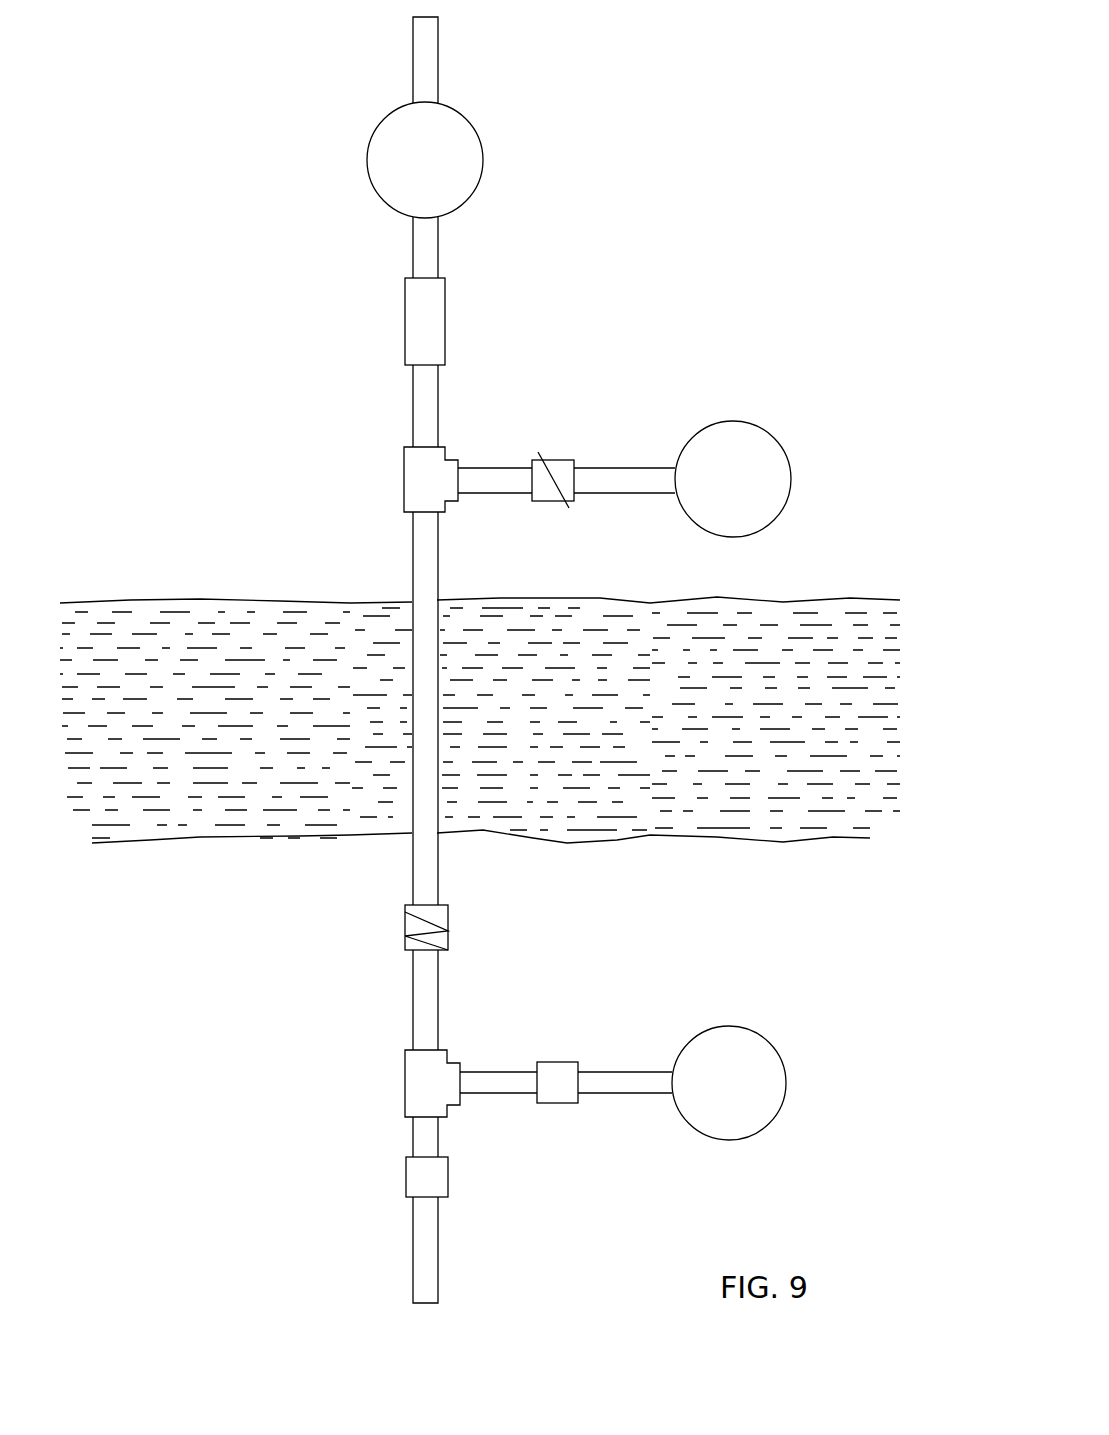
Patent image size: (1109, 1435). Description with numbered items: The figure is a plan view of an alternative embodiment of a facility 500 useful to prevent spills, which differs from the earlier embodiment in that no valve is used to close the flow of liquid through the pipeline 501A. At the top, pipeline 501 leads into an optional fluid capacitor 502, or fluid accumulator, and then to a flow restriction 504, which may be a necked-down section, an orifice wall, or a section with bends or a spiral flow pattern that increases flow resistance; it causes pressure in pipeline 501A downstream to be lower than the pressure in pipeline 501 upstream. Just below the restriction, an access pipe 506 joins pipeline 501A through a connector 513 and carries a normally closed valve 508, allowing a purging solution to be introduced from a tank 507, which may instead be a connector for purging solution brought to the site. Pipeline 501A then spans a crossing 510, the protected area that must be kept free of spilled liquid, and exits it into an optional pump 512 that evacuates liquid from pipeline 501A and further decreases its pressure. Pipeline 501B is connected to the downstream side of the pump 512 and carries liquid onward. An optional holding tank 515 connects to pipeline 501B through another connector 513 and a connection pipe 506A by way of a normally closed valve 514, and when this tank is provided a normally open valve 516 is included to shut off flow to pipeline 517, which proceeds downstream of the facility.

The facility 500 is at (153, 86).
The pipeline 501 is at (412, 75).
The fluid capacitor 502 is at (368, 147).
The flow restriction 504 is at (447, 330).
The connector 513 is at (448, 460).
The access pipe 506 is at (485, 495).
The valve 508 is at (558, 460).
The tank 507 is at (787, 503).
The crossing 510 is at (257, 620).
The pipeline 501A is at (412, 582).
The pump 512 is at (405, 918).
The pipeline 501B is at (440, 990).
The valve 514 is at (563, 1062).
The connection pipe 506A is at (492, 1095).
The holding tank 515 is at (750, 1120).
The valve 516 is at (406, 1178).
The pipeline 517 is at (413, 1241).